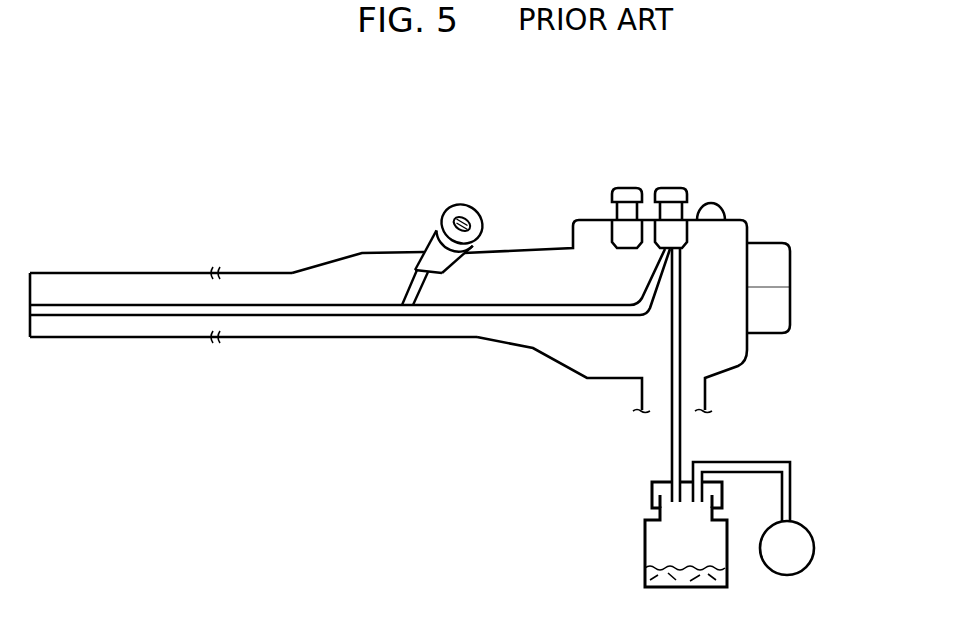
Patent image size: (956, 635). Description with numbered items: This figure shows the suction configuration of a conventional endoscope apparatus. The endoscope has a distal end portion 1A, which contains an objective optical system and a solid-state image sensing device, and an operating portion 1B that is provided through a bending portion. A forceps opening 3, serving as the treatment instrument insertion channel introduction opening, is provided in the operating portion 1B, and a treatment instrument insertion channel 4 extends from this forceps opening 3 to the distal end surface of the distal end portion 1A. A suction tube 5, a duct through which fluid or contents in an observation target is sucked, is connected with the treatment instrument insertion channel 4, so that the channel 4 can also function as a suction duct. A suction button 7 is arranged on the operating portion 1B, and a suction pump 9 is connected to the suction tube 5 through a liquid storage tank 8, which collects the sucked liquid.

The distal end portion 1A is at (55, 273).
The operating portion 1B is at (528, 250).
The forceps opening 3 is at (457, 205).
The treatment instrument insertion channel 4 is at (166, 304).
The suction tube 5 is at (503, 320).
The suction button 7 is at (667, 188).
The liquid storage tank 8 is at (645, 542).
The suction pump 9 is at (815, 546).